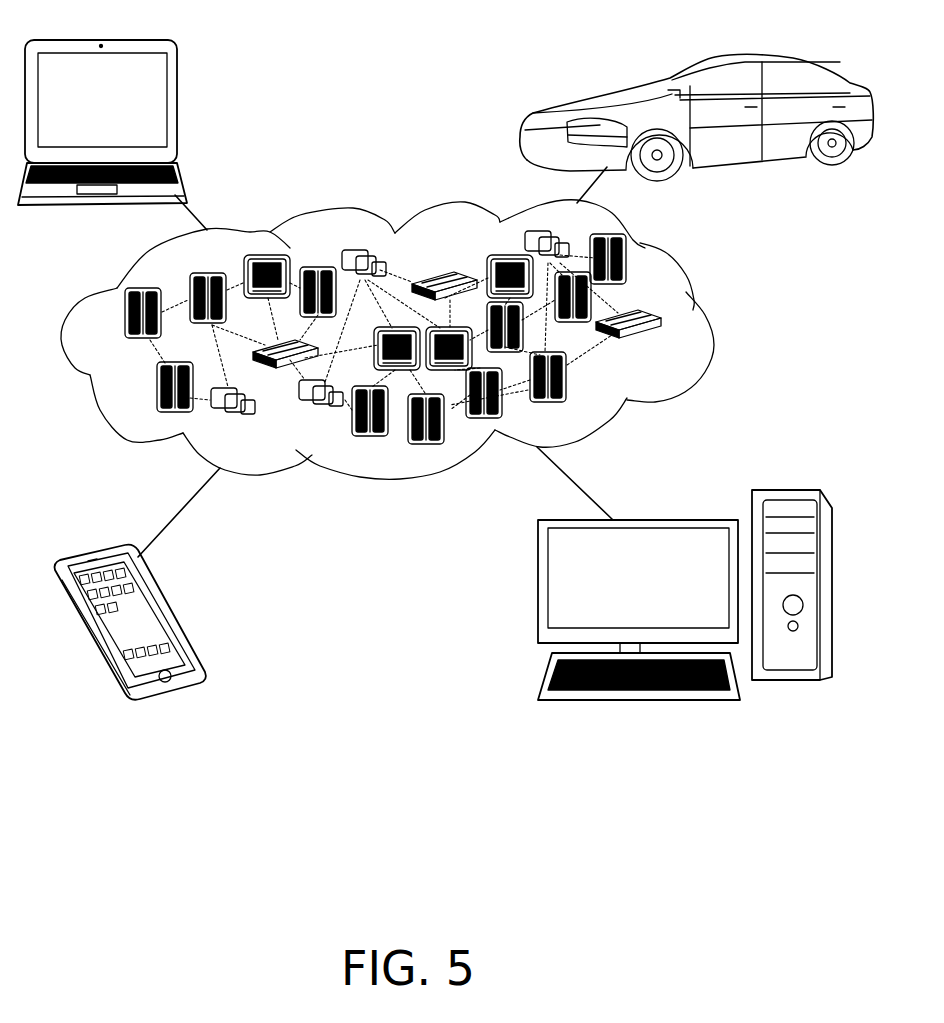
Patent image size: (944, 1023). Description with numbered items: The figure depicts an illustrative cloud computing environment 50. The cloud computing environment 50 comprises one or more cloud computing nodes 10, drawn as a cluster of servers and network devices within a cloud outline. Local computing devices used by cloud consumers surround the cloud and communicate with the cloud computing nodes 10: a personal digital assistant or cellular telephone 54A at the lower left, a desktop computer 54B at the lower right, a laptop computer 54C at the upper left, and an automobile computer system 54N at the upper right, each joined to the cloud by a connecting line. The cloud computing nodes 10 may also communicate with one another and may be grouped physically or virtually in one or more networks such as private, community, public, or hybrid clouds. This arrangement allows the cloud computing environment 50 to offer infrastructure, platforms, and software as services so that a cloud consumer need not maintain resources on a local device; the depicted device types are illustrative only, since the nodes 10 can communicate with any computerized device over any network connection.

The cloud computing environment 50 is at (417, 340).
The cloud computing node 10 is at (664, 338).
The personal digital assistant or cellular telephone 54A is at (152, 612).
The desktop computer 54B is at (727, 502).
The laptop computer 54C is at (158, 118).
The automobile computer system 54N is at (522, 125).